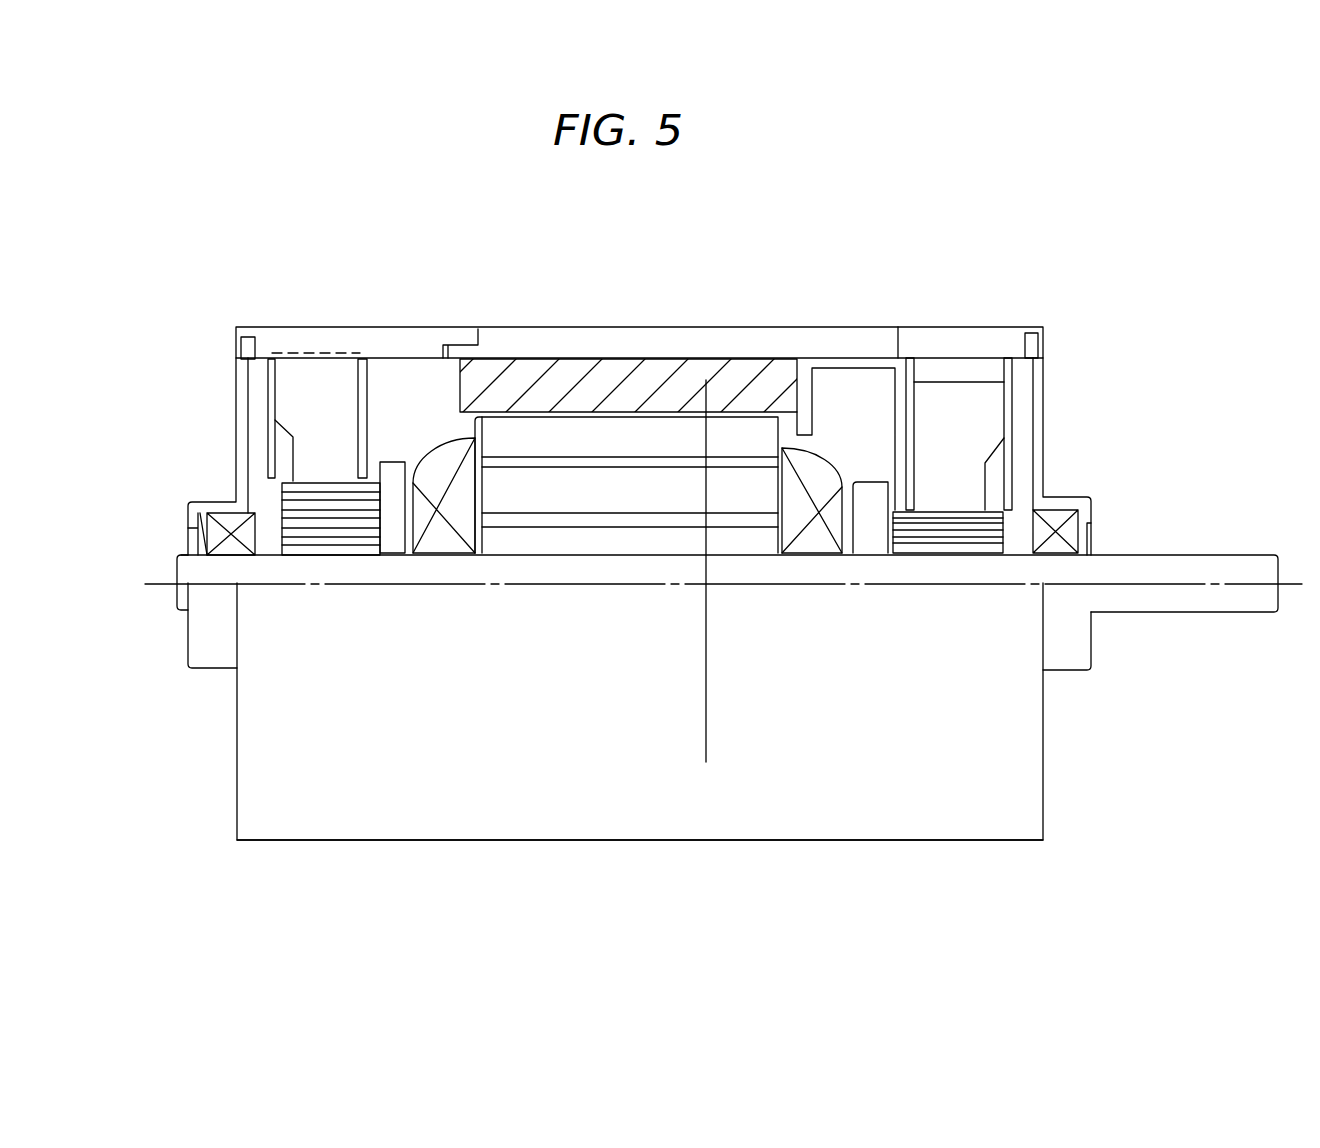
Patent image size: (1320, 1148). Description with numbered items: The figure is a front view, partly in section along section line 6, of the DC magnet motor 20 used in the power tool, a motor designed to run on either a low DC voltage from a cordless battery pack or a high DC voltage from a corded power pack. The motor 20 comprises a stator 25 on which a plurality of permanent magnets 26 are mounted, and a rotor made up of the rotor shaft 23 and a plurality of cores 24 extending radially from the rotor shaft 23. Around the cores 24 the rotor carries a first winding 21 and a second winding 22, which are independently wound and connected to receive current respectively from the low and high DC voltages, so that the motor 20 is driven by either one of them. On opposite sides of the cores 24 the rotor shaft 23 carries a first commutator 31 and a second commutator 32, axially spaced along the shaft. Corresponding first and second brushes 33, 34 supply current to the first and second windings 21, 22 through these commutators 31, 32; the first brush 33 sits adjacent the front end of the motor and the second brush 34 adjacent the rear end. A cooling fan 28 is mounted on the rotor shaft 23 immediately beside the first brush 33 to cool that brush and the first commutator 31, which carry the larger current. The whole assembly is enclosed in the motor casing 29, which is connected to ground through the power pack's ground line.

The section line 6- 6 is at (695, 393).
The DC magnet motor 20 is at (943, 806).
The first winding 21 is at (437, 465).
The second winding 22 is at (822, 472).
The rotor shaft 23 is at (1228, 598).
The cores 24 is at (510, 432).
The stator 25 is at (807, 337).
The permanent magnets 26 is at (558, 378).
The cooling fan 28 is at (878, 403).
The motor casing 29 is at (428, 817).
The first commutator 31 is at (663, 514).
The second commutator 32 is at (307, 520).
The first brush 33 is at (985, 410).
The second brush 34 is at (290, 390).